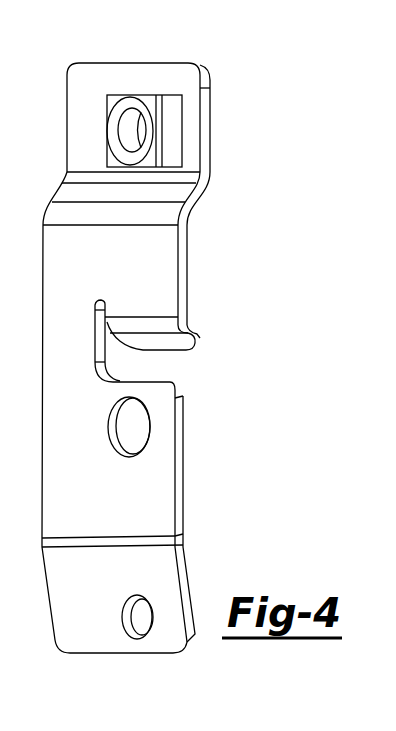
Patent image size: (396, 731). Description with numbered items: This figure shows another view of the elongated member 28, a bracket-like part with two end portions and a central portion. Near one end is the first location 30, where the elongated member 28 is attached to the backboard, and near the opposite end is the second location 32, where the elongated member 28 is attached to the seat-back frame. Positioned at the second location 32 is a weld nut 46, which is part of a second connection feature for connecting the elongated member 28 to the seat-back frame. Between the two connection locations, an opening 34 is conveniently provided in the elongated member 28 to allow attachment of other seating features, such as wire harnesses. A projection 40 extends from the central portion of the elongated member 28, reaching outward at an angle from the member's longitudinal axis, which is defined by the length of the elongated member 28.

The elongated member 28 is at (240, 58).
The first location 30 is at (138, 618).
The second location 32 is at (125, 132).
The opening 34 is at (134, 432).
The projection 40 is at (197, 326).
The weld nut 46 is at (168, 128).